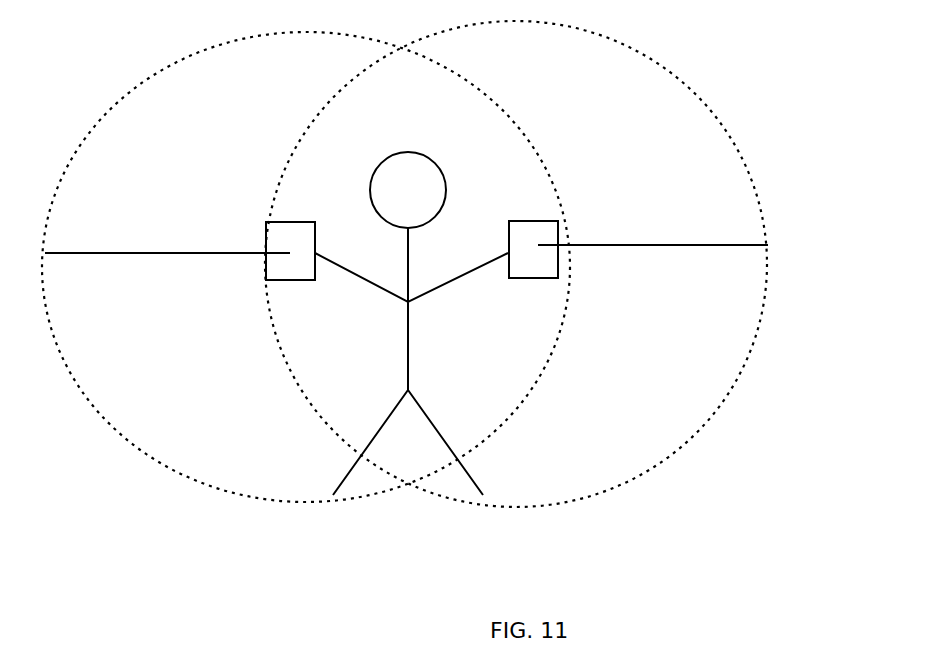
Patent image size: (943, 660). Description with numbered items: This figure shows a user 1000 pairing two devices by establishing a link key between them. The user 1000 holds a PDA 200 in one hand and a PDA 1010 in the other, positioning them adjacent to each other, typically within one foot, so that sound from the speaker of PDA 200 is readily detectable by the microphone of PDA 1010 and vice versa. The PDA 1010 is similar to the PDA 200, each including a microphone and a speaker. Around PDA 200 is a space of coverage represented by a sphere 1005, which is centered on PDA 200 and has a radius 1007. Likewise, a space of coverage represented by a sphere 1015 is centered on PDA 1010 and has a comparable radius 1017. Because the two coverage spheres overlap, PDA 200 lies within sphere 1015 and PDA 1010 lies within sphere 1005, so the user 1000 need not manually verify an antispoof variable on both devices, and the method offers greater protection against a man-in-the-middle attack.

The sphere 1005 is at (120, 105).
The sphere 1015 is at (740, 152).
The user 1000 is at (412, 152).
The PDA 200 is at (290, 233).
The PDA 1010 is at (535, 230).
The radius 1007 is at (145, 256).
The radius 1017 is at (677, 247).